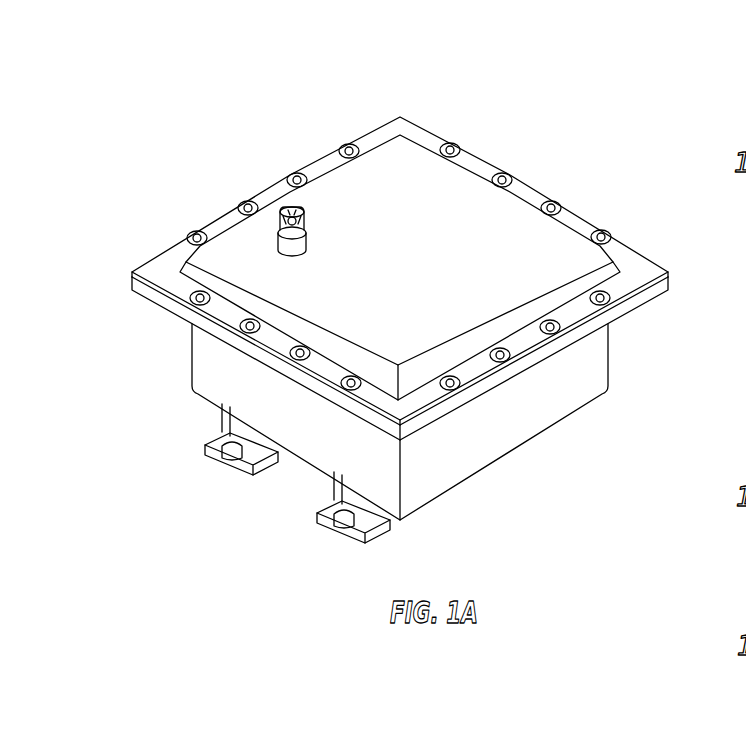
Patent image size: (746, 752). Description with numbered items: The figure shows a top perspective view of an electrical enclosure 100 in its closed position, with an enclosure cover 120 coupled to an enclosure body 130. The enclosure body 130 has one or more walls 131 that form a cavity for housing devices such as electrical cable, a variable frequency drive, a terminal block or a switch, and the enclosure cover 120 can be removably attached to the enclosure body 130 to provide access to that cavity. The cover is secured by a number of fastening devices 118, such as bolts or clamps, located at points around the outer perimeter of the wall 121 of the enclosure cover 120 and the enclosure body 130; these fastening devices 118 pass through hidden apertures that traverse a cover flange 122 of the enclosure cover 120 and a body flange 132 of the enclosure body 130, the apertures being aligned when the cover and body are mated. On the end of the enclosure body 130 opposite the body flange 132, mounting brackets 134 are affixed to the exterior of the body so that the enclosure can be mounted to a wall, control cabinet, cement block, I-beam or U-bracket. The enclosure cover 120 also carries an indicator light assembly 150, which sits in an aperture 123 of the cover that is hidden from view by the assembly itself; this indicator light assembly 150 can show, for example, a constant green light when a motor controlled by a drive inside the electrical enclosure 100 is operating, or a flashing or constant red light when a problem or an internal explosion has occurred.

The electrical enclosure 100 is at (325, 57).
The enclosure cover 120 is at (471, 132).
The wall 121 is at (465, 268).
The cover flange 122 is at (634, 262).
The fastening devices 118 is at (601, 229).
The indicator light assembly 150 is at (281, 191).
The aperture 123 is at (302, 257).
The enclosure body 130 is at (533, 482).
The walls 131 is at (542, 423).
The body flange 132 is at (664, 297).
The mounting brackets 134 is at (207, 452).